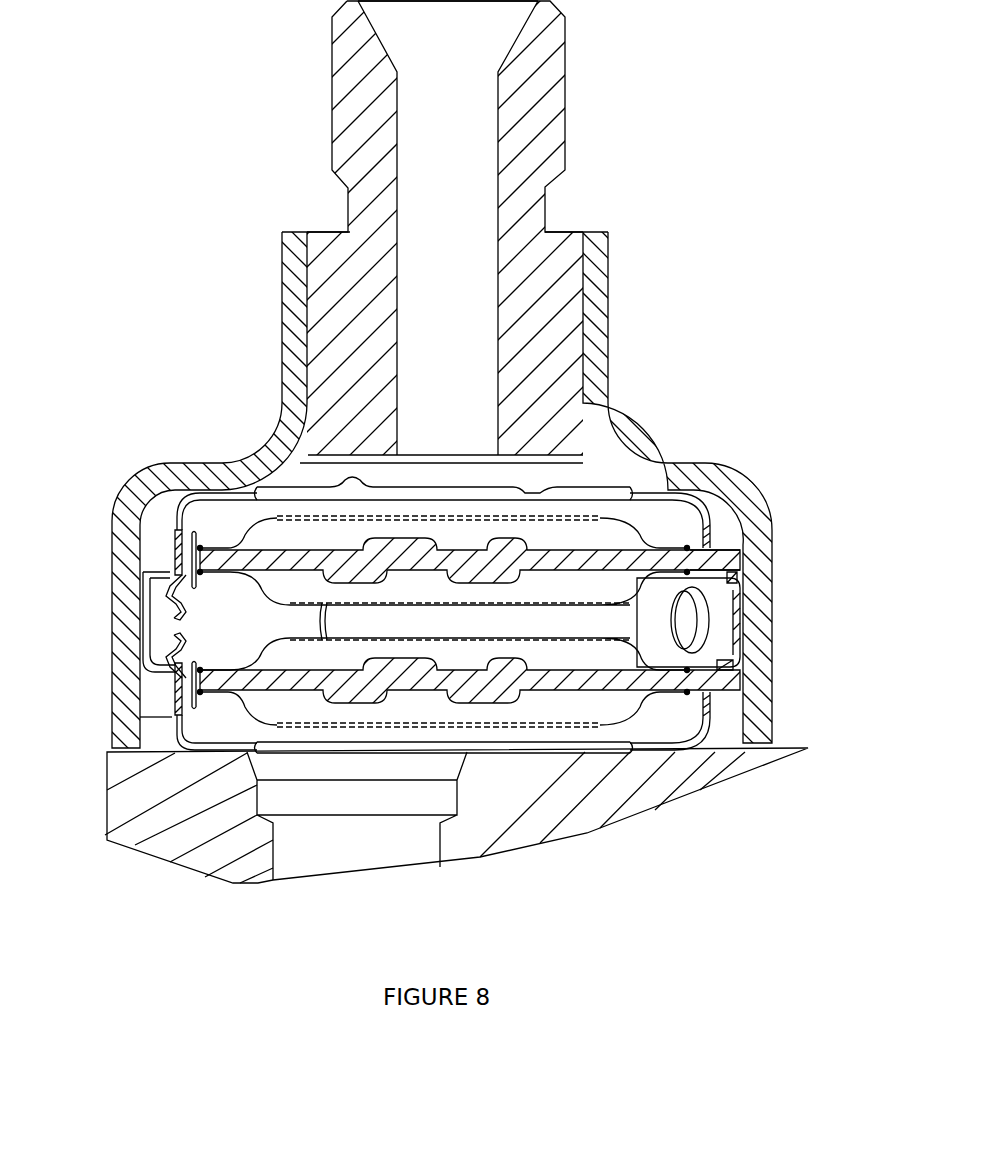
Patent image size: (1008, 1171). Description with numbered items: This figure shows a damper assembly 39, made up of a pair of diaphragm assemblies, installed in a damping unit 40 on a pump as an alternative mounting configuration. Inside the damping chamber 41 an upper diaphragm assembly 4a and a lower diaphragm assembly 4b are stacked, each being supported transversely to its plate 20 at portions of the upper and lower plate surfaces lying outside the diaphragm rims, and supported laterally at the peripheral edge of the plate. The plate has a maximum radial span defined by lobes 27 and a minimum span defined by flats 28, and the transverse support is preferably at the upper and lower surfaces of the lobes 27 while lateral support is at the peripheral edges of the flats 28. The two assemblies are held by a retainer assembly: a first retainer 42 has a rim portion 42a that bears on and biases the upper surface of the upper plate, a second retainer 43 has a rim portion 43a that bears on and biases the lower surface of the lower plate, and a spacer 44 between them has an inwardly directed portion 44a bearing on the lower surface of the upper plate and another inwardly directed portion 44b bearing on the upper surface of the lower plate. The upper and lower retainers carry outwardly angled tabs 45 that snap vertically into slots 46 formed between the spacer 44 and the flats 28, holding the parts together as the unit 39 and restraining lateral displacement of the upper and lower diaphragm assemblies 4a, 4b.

The damping unit 40 is at (235, 142).
The damper assembly 39 is at (533, 490).
The upper diaphragm assembly 4a is at (590, 512).
The lower diaphragm assembly 4b is at (622, 718).
The plate 20 is at (597, 548).
The rim portion 42a is at (707, 535).
The lobes 27 is at (705, 556).
The spacer 44 is at (738, 615).
The inwardly directed portion 44a is at (732, 575).
The inwardly directed portion 44b is at (733, 667).
The rim portion 43a is at (710, 695).
The second retainer 43 is at (190, 745).
The outwardly angled tabs 45 is at (173, 602).
The slots 46 is at (200, 573).
The flats 28 is at (192, 562).
The damping chamber 41 is at (158, 527).
The first retainer 42 is at (220, 492).